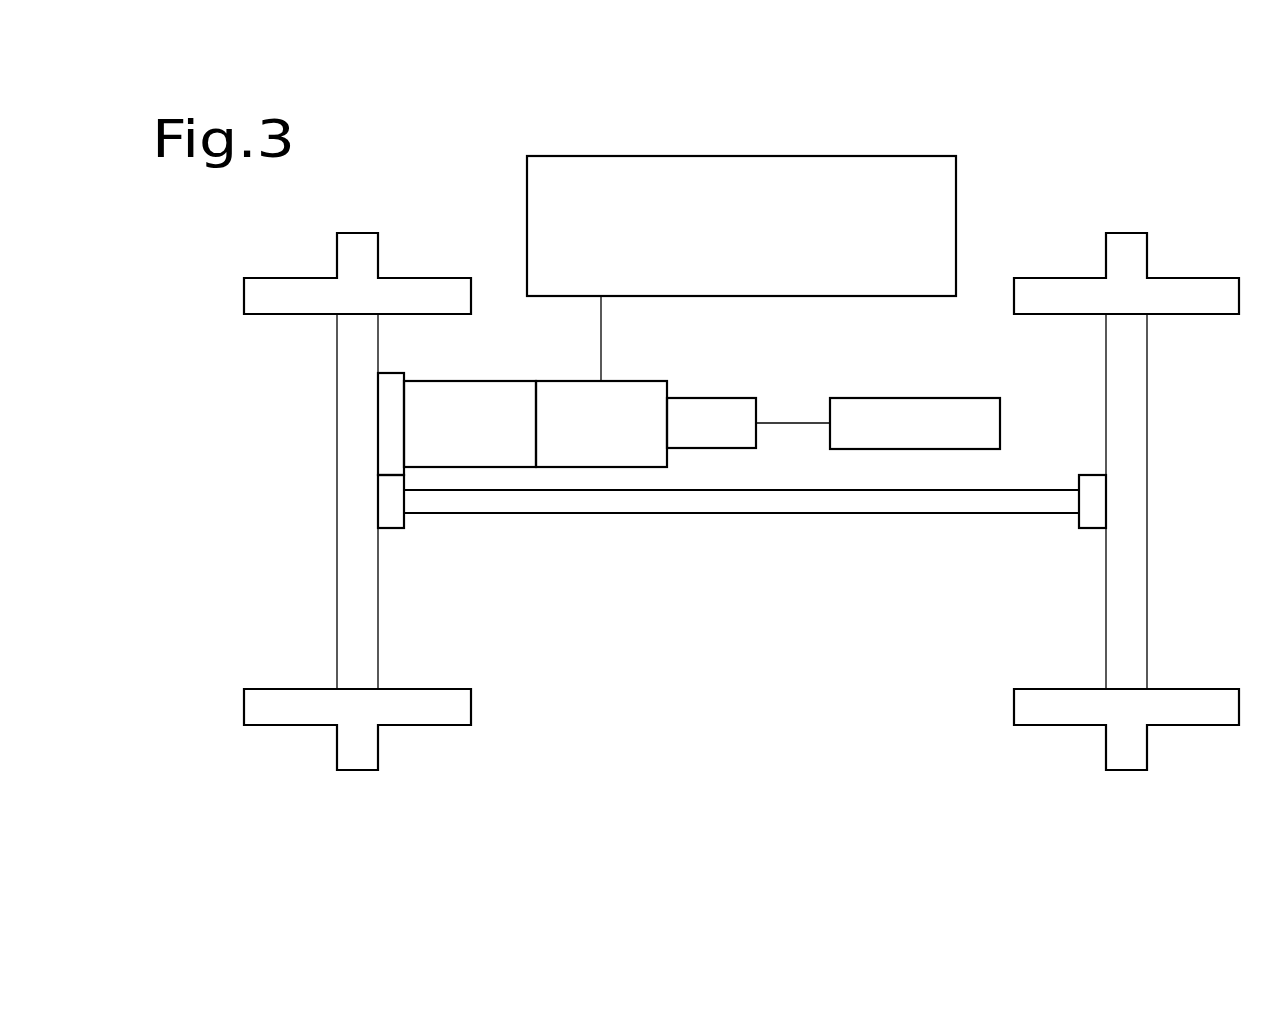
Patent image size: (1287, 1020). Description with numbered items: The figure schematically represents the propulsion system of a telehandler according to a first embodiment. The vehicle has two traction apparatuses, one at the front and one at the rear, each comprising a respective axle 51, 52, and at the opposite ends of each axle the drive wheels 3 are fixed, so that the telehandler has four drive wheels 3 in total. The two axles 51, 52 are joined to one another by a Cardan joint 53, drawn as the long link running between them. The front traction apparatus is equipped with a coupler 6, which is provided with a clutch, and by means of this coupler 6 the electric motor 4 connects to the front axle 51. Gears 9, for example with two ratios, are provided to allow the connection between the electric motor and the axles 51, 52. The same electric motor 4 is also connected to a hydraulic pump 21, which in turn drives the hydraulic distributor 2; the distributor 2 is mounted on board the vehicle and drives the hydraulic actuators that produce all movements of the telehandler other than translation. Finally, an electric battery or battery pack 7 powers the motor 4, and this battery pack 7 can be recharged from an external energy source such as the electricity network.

The hydraulic distributor 2 is at (924, 408).
The drive wheel 3 is at (270, 278).
The electric motor 4 is at (641, 458).
The coupler 6 is at (474, 388).
The battery pack 7 is at (671, 180).
The gears 9 is at (389, 385).
The hydraulic pump 21 is at (727, 398).
The axle 51 is at (336, 477).
The axle 52 is at (1144, 420).
The Cardan joint 53 is at (808, 513).